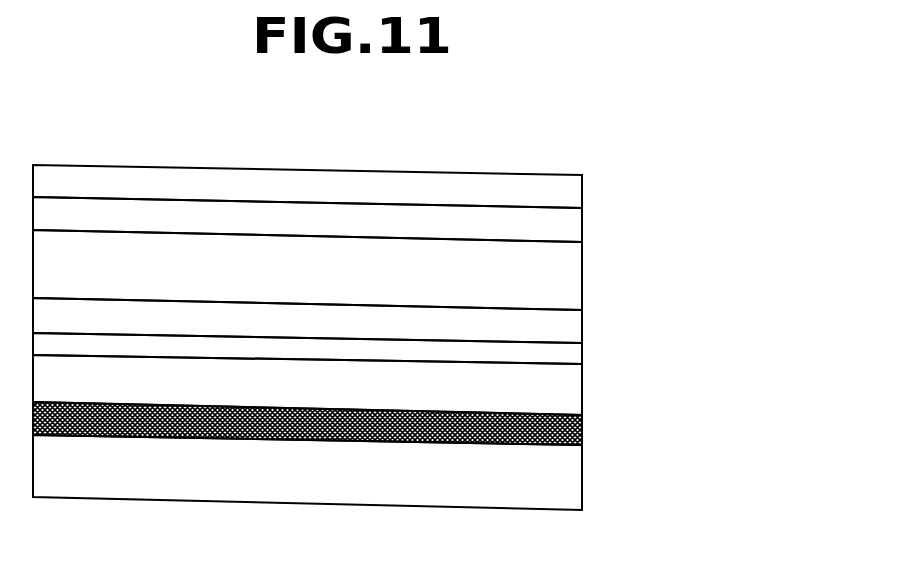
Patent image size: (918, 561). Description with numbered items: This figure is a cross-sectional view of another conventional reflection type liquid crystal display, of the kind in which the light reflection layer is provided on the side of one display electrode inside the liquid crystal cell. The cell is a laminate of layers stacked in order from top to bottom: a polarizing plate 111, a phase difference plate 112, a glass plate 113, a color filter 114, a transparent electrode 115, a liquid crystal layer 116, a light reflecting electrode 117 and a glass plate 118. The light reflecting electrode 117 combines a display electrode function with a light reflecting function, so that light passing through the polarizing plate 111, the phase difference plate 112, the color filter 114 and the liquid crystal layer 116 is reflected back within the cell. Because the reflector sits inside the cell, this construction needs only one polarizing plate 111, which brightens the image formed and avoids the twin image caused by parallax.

The polarizing plate 111 is at (568, 187).
The phase difference plate 112 is at (563, 226).
The glass plate 113 is at (562, 278).
The color filter 114 is at (572, 328).
The transparent electrode 115 is at (574, 358).
The liquid crystal layer 116 is at (562, 384).
The light reflecting electrode 117 is at (583, 430).
The glass plate 118 is at (570, 485).